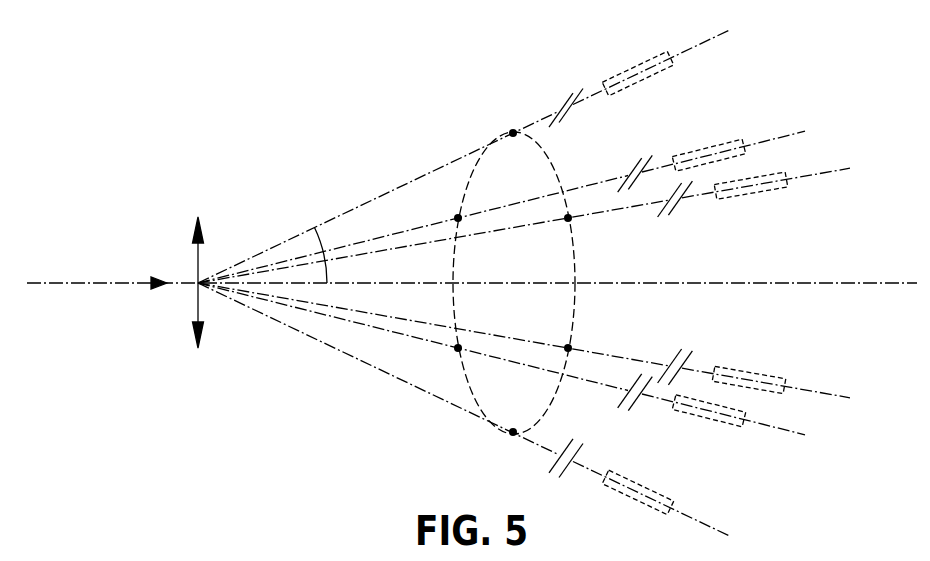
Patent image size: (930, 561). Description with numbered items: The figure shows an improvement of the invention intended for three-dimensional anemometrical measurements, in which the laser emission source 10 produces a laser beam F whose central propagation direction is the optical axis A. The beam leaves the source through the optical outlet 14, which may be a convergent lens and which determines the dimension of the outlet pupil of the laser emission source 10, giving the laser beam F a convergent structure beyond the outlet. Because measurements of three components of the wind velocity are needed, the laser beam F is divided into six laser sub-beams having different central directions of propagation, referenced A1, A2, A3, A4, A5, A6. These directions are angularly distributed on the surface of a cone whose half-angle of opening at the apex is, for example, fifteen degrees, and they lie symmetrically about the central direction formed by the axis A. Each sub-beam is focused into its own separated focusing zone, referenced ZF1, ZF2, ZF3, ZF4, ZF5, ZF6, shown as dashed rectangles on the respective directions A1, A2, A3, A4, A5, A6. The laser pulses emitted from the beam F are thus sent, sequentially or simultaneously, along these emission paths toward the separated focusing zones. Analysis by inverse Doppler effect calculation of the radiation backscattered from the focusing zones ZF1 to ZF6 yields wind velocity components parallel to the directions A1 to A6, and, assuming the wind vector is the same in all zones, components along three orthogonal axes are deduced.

The laser emission source 10 is at (60, 277).
The optical outlet 14 is at (197, 257).
The laser beam F is at (157, 288).
The optical axis A is at (52, 288).
The central direction of propagation of first laser sub-beam A1 is at (493, 156).
The central direction of propagation of second laser sub-beam A2 is at (514, 182).
The central direction of propagation of third laser sub-beam A3 is at (539, 340).
The central direction of propagation of fourth laser sub-beam A4 is at (494, 409).
The central direction of propagation of fifth laser sub-beam A5 is at (516, 387).
The central direction of propagation of sixth laser sub-beam A6 is at (542, 225).
The focusing zone of first sub-beam ZF1 is at (655, 82).
The focusing zone of second sub-beam ZF2 is at (700, 148).
The focusing zone of third sub-beam ZF3 is at (763, 365).
The focusing zone of fourth sub-beam ZF4 is at (650, 487).
The focusing zone of fifth sub-beam ZF5 is at (700, 417).
The focusing zone of sixth sub-beam ZF6 is at (760, 197).